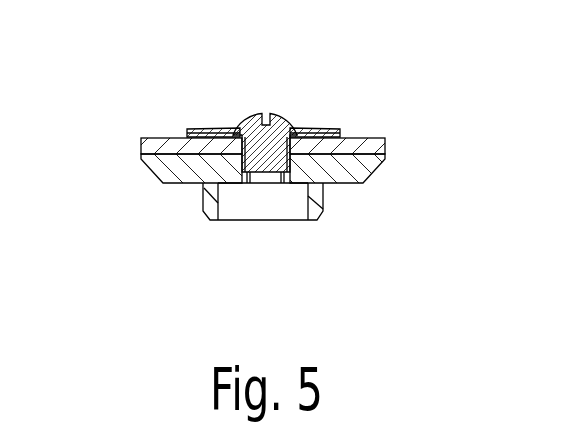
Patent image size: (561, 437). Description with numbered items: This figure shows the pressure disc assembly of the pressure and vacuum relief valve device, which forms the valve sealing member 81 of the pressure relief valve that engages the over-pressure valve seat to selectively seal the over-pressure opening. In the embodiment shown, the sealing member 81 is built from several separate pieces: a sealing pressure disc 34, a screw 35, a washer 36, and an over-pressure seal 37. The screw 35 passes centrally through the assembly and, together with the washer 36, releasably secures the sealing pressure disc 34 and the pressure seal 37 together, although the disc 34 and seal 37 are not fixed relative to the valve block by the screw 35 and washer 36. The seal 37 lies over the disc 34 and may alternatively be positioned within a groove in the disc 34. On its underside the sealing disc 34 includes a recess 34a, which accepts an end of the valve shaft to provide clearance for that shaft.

The valve sealing member 81 is at (92, 152).
The sealing pressure disc 34 is at (319, 235).
The recess 34a is at (282, 210).
The screw 35 is at (275, 112).
The washer 36 is at (323, 128).
The over-pressure seal 37 is at (386, 144).